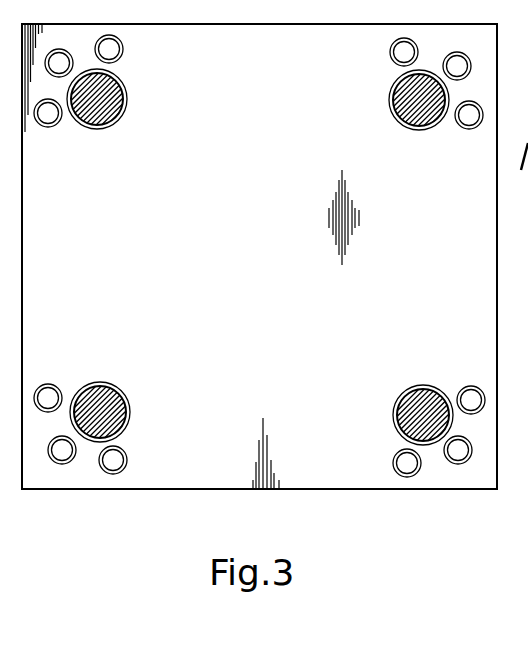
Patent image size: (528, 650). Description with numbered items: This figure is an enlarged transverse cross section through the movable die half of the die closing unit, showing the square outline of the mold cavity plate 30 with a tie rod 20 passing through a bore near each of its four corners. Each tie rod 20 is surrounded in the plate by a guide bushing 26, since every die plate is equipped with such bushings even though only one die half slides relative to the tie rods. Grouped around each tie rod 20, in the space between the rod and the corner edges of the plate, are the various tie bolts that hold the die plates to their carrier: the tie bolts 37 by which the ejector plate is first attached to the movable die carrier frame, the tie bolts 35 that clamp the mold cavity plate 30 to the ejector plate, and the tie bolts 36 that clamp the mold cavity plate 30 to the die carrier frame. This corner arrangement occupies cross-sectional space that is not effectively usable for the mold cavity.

The tie rod 20 is at (97, 105).
The guide bushing 26 is at (93, 441).
The mold cavity plate 30 is at (361, 477).
The tie bolt 35 is at (114, 461).
The tie bolt 36 is at (49, 398).
The tie bolt 37 is at (59, 455).